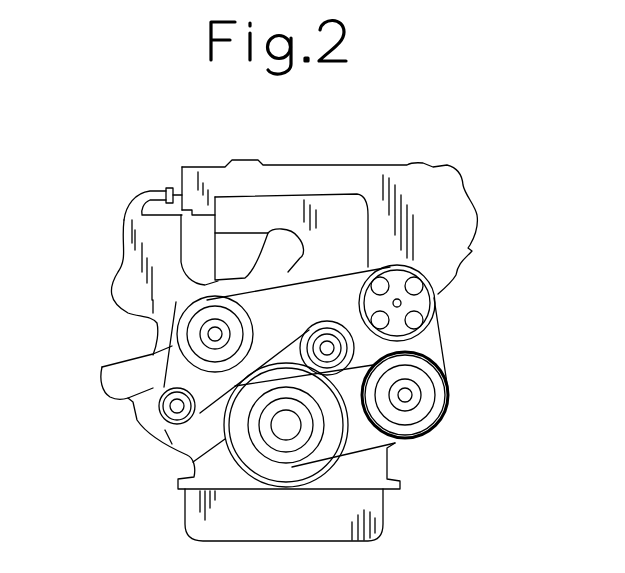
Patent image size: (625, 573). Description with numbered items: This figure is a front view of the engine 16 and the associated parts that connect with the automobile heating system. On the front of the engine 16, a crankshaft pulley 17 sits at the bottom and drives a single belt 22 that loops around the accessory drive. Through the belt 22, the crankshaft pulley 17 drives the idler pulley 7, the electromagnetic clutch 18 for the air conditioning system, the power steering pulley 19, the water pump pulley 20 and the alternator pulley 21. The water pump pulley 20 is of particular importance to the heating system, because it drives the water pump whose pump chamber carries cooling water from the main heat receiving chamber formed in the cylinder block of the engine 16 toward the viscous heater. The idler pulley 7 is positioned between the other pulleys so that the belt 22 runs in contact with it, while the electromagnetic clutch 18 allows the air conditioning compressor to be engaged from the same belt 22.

The idler pulley 7 is at (315, 330).
The engine 16 is at (360, 182).
The crankshaft pulley 17 is at (243, 439).
The electromagnetic clutch 18 is at (436, 410).
The power steering pulley 19 is at (415, 281).
The water pump pulley 20 is at (190, 303).
The alternator pulley 21 is at (165, 406).
The belt 22 is at (445, 347).